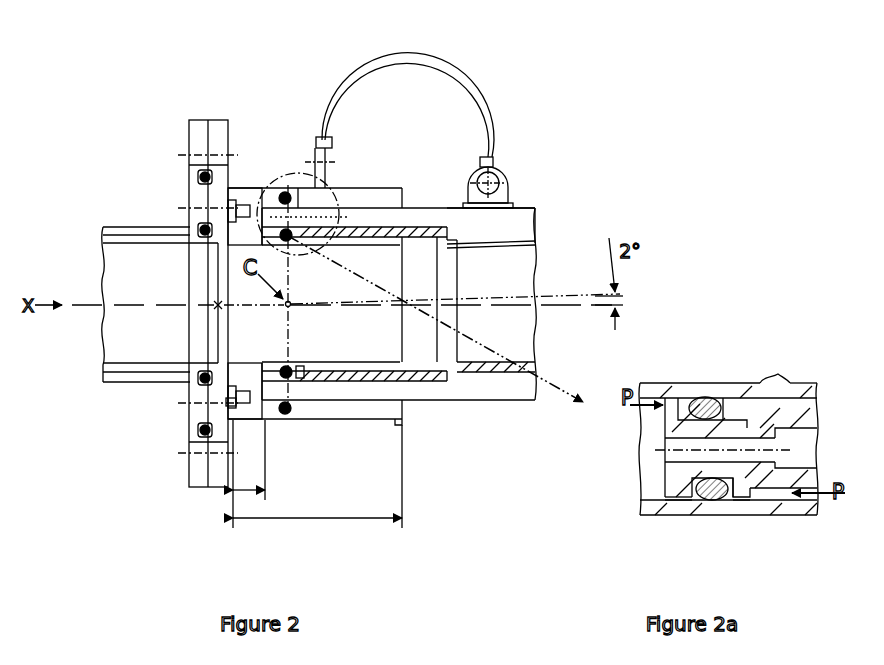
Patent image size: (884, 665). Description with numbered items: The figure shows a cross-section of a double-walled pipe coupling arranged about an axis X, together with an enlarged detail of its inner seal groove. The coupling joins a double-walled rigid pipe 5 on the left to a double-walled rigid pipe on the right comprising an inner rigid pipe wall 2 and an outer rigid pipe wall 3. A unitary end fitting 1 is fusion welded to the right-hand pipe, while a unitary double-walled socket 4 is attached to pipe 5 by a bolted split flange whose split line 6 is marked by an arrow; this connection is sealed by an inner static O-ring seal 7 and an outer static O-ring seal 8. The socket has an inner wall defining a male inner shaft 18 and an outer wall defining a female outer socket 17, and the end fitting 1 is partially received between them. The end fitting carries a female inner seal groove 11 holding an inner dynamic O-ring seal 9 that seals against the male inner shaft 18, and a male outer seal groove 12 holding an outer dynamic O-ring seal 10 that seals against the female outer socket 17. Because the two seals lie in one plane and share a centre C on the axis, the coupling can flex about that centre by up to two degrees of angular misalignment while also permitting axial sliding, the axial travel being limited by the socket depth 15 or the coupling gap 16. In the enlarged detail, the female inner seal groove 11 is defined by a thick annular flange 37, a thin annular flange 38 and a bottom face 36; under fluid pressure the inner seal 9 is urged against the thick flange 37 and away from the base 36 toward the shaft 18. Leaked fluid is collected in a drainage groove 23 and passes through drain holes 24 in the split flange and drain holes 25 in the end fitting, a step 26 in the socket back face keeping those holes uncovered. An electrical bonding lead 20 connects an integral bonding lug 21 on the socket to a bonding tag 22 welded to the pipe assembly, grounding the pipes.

In FIG. 2, the end fitting 1 is at (412, 221).
In FIG. 2A, the end fitting 1 is at (663, 474).
In FIG. 2, the inner rigid pipe wall 2 is at (520, 240).
In FIG. 2, the outer rigid pipe wall 3 is at (525, 205).
In FIG. 2, the double-walled socket 4 is at (236, 186).
In FIG. 2A, the double-walled socket 4 is at (638, 508).
In FIG. 2, the double-walled rigid pipe 5 is at (140, 225).
In FIG. 2, the split line 6 is at (210, 118).
In FIG. 2, the inner static O-ring seal 7 is at (199, 379).
In FIG. 2, the outer static O-ring seal 8 is at (200, 433).
In FIG. 2, the inner dynamic O-ring seal 9 is at (288, 227).
In FIG. 2A, the inner dynamic O-ring seal 9 is at (713, 500).
In FIG. 2, the outer dynamic O-ring seal 10 is at (284, 190).
In FIG. 2A, the outer dynamic O-ring seal 10 is at (705, 396).
In FIG. 2, the female inner seal groove 11 is at (302, 376).
In FIG. 2, the male outer seal groove 12 is at (291, 412).
In FIG. 2, the socket depth 15 is at (315, 520).
In FIG. 2, the coupling gap 16 is at (250, 492).
In FIG. 2, the female outer socket 17 is at (379, 187).
In FIG. 2, the male inner shaft 18 is at (392, 368).
In FIG. 2, the electrical bonding lead 20 is at (431, 62).
In FIG. 2, the integral bonding lug 21 is at (319, 150).
In FIG. 2, the bonding tag 22 is at (501, 169).
In FIG. 2, the drainage groove 23 is at (212, 405).
In FIG. 2, the drain holes 24 is at (234, 405).
In FIG. 2, the drain holes 25 is at (315, 215).
In FIG. 2, the step 26 is at (235, 227).
In FIG. 2A, the bottom face 36 is at (724, 475).
In FIG. 2A, the thick annular flange 37 is at (677, 501).
In FIG. 2A, the thin annular flange 38 is at (743, 501).